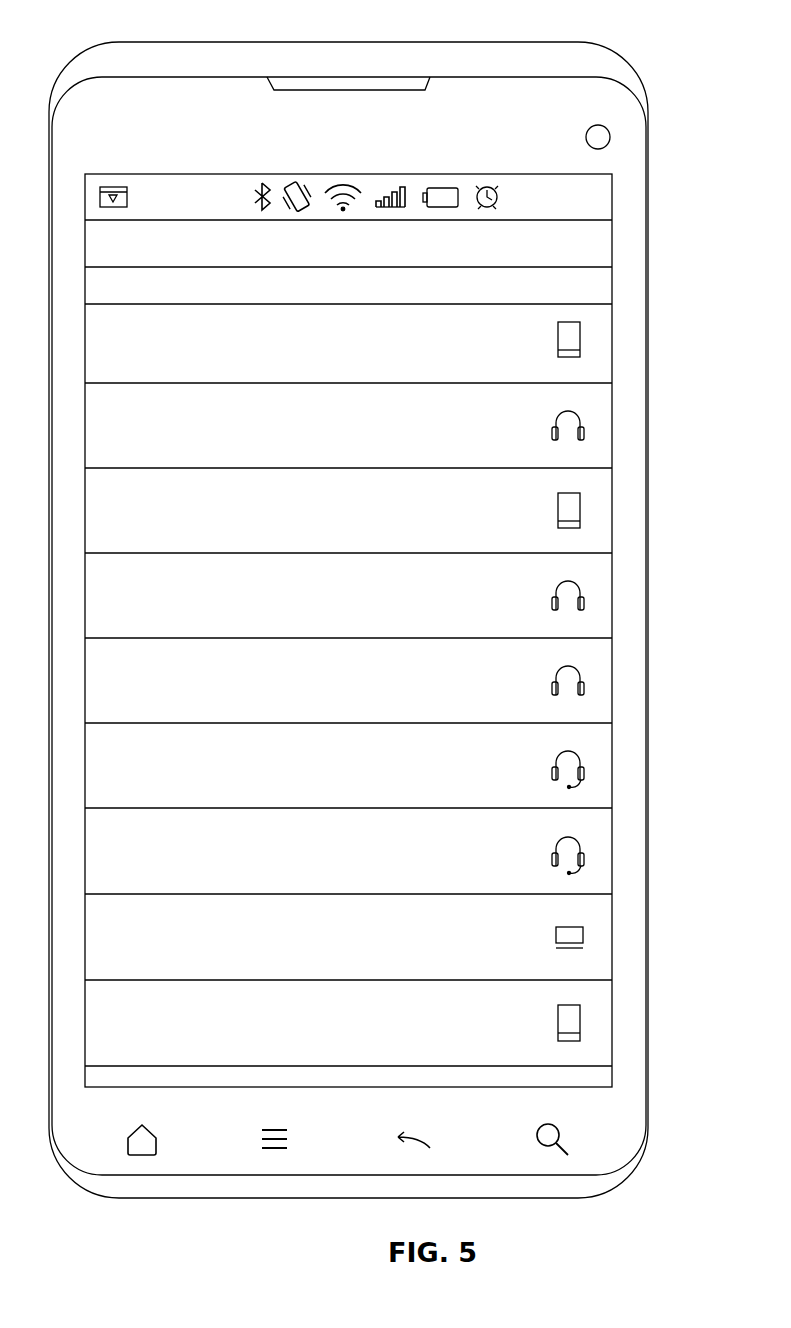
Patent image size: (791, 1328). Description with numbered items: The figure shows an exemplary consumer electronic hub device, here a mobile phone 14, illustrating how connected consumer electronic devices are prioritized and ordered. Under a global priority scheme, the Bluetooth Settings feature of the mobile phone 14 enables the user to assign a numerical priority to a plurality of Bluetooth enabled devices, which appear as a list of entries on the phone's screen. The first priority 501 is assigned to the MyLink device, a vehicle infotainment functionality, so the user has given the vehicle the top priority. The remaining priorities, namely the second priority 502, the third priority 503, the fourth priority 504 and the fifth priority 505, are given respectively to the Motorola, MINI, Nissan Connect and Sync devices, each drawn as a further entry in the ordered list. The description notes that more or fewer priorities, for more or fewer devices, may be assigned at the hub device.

The mobile phone 14 is at (668, 32).
The Priority 1 501 is at (597, 680).
The Priority 2 502 is at (597, 765).
The Priority 3 503 is at (597, 848).
The Priority 4 504 is at (597, 597).
The Priority 5 505 is at (597, 430).